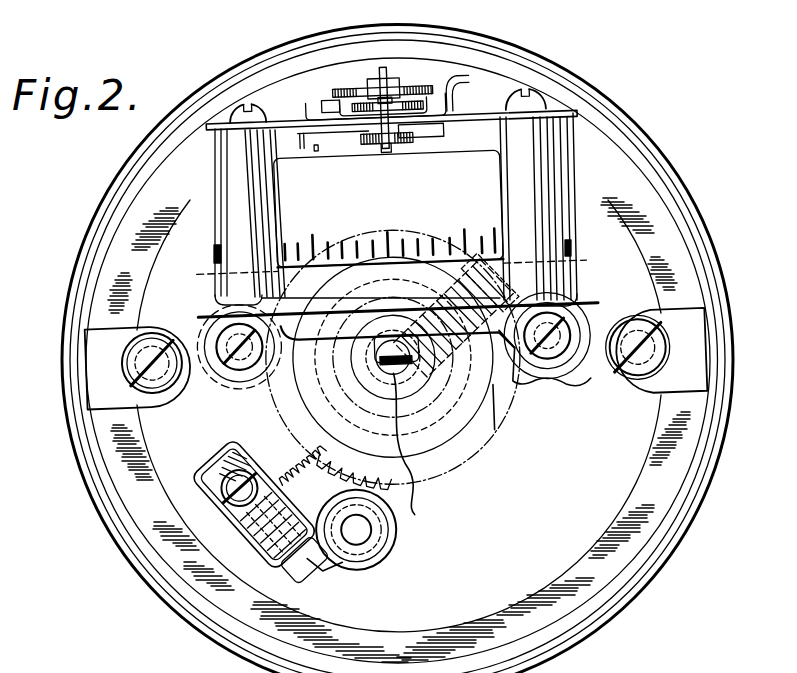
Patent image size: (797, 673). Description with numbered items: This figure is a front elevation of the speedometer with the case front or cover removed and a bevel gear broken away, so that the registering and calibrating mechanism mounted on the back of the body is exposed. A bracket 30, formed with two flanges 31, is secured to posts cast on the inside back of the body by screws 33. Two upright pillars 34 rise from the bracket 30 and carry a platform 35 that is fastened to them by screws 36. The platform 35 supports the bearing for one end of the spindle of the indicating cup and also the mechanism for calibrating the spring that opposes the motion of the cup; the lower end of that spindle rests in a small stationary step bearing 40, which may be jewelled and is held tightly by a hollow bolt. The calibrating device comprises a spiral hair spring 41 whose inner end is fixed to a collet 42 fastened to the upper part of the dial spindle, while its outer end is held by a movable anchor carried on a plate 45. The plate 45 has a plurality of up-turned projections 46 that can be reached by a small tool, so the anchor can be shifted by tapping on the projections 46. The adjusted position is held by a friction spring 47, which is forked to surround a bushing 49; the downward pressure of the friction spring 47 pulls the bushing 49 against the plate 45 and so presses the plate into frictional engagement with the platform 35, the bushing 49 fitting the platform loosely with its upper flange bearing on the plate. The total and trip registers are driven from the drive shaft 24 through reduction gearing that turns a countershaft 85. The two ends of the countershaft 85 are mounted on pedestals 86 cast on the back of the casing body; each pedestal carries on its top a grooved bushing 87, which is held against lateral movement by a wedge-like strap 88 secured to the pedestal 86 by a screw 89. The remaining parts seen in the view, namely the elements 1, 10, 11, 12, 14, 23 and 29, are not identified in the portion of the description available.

The casing 1 is at (700, 489).
The base plate with hatched rim 10 is at (589, 580).
The mounting plate 11 is at (107, 352).
The fastening screw 12 is at (147, 333).
The ring flange 14 is at (204, 222).
The gear wheel 23 is at (298, 375).
The drive shaft 24 is at (396, 380).
The pawl 29 is at (434, 371).
The bracket 30 is at (356, 262).
The flanges 31 is at (587, 404).
The screws 33 is at (238, 366).
The upright pillars 34 is at (233, 143).
The platform 35 is at (296, 125).
The screws 36 is at (268, 99).
The stationary step bearing 40 is at (413, 150).
The spiral hair spring 41 is at (428, 76).
The collet 42 is at (376, 77).
The plate 45 is at (361, 148).
The projections 46 is at (479, 90).
The friction spring 47 is at (328, 118).
The bushing 49 is at (435, 135).
The countershaft 85 is at (422, 455).
The pedestals 86 is at (289, 550).
The grooved bushing 87 is at (259, 567).
The wedge-like strap 88 is at (208, 476).
The screw 89 is at (278, 448).